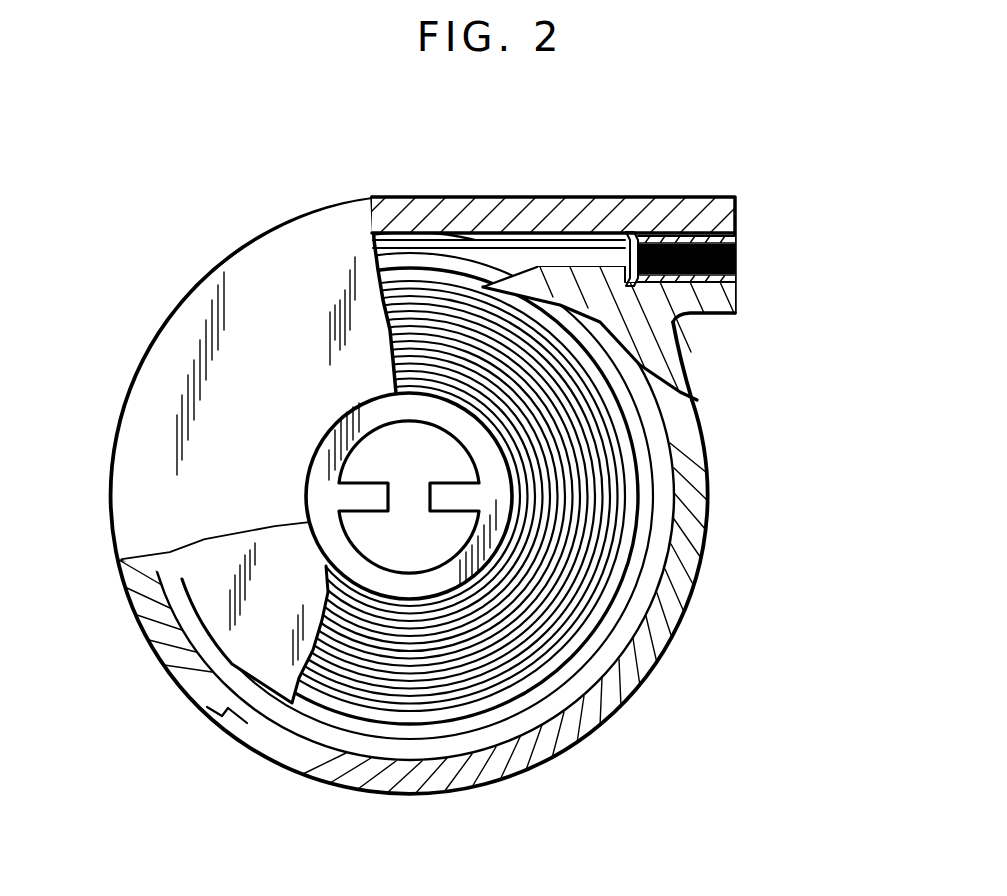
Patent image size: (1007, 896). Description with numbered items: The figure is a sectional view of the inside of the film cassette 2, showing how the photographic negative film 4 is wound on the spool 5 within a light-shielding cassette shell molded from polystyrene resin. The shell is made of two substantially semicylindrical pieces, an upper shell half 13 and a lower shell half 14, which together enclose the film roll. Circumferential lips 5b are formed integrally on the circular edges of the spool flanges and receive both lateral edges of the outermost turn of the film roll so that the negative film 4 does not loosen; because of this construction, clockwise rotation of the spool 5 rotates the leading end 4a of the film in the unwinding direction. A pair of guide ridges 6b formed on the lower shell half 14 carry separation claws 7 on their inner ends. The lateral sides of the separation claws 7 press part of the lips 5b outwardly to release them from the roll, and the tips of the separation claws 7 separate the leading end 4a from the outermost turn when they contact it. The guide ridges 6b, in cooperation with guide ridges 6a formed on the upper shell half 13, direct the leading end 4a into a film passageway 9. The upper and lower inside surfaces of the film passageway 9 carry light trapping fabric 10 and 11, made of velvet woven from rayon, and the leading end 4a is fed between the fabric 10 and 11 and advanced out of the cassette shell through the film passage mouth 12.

The film cassette 2 is at (99, 744).
The negative film 4 is at (400, 706).
The leading end 4a is at (393, 262).
The spool 5 is at (200, 713).
The circumferential lips 5b is at (500, 716).
The guide ridges 6a is at (492, 234).
The guide ridges 6b is at (600, 335).
The separation claws 7 is at (524, 284).
The film passageway 9 is at (600, 256).
The light trapping fabric 10 is at (705, 236).
The light trapping fabric 11 is at (716, 316).
The film passage mouth 12 is at (737, 262).
The upper shell half 13 is at (186, 672).
The lower shell half 14 is at (737, 247).